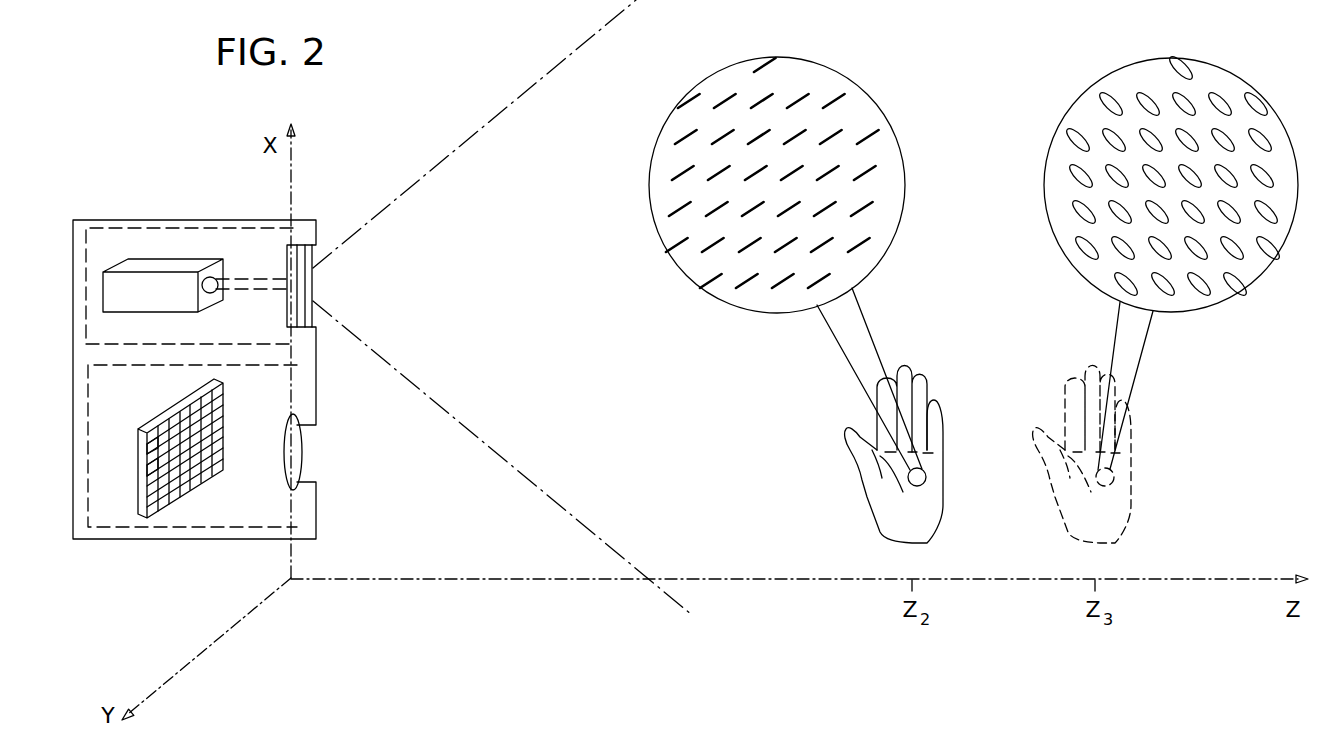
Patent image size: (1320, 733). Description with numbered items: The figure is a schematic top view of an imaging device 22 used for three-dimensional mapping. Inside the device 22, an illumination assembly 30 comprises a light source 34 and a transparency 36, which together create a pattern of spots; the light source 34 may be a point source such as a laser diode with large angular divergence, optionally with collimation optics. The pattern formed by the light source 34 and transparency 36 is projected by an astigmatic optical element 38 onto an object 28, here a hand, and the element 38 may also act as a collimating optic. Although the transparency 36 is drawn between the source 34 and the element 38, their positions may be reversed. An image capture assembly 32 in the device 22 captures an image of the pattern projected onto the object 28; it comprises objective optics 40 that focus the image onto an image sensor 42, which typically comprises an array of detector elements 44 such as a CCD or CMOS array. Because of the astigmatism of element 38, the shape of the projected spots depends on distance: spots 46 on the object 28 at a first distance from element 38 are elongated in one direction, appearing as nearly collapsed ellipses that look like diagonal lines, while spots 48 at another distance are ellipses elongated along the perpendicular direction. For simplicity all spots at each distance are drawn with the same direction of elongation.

The device 22 is at (145, 220).
The object 28 is at (866, 498).
The illumination assembly 30 is at (200, 228).
The image capture assembly 32 is at (143, 530).
The light source 34 is at (102, 285).
The transparency 36 is at (287, 255).
The astigmatic optical element 38 is at (313, 283).
The objective optics 40 is at (287, 435).
The image sensor 42 is at (168, 417).
The detector elements 44 is at (144, 468).
The spots 46 is at (864, 145).
The spots 48 is at (1140, 98).